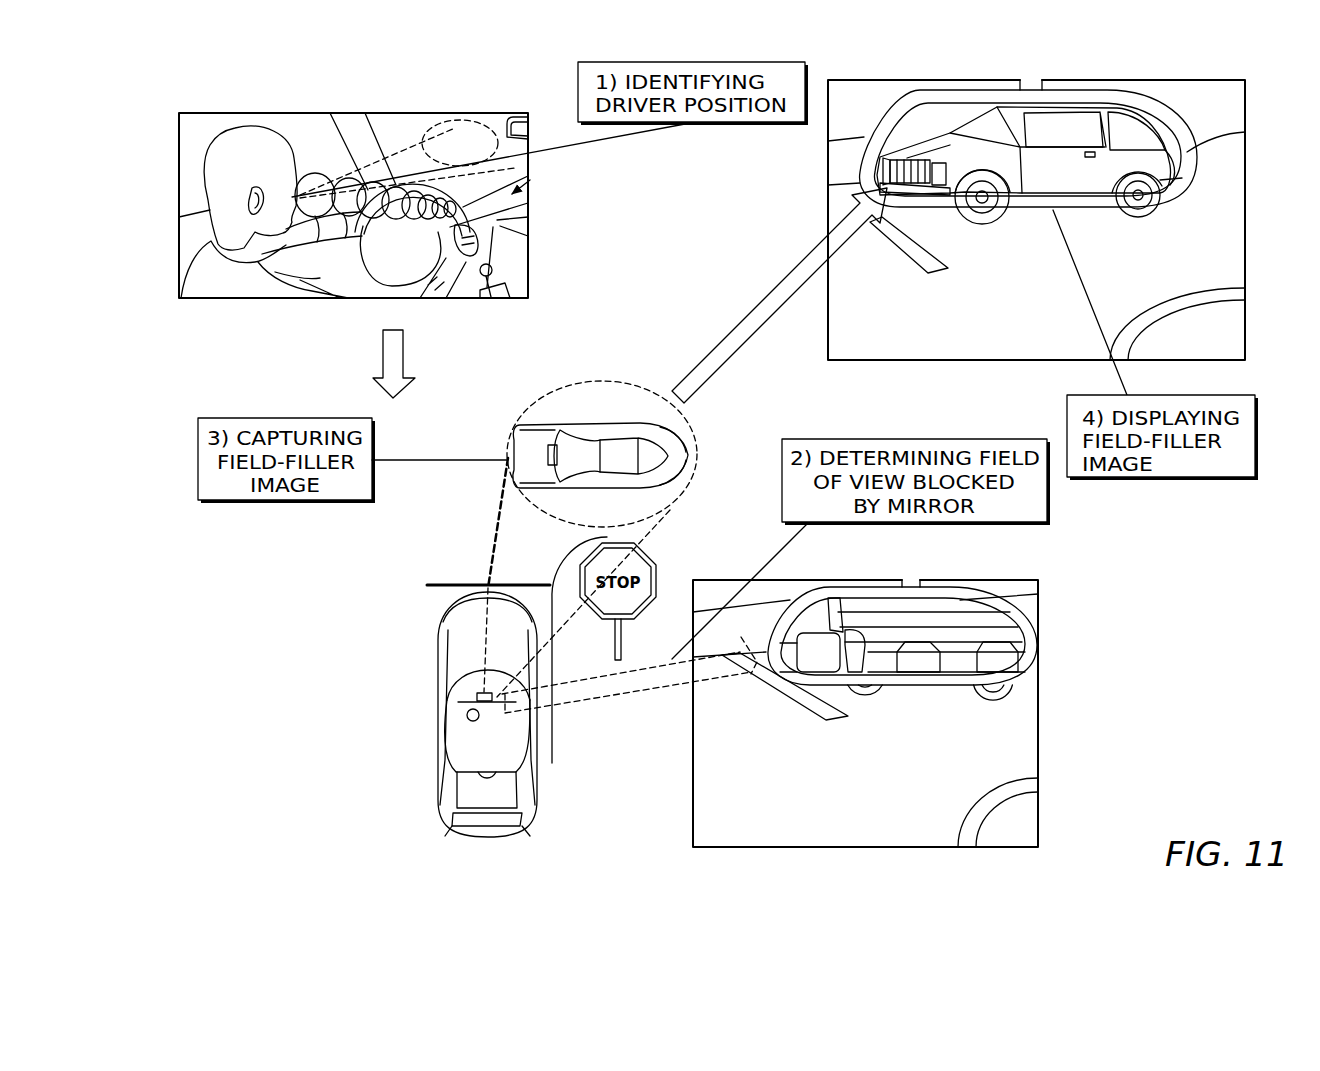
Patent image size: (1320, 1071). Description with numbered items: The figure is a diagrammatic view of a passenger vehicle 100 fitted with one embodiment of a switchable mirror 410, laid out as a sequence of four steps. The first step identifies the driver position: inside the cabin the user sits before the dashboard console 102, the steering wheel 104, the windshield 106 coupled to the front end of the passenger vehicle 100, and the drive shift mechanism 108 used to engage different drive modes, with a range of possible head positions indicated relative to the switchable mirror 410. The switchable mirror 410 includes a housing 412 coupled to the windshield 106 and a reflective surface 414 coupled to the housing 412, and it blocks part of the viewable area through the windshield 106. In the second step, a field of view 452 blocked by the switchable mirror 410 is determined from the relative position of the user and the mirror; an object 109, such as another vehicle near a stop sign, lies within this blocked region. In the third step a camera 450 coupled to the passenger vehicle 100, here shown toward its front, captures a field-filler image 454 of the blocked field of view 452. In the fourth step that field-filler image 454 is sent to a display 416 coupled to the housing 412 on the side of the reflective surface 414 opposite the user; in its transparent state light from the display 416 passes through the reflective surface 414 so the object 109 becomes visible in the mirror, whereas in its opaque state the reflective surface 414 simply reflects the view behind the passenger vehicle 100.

The passenger vehicle 100 is at (226, 108).
The dashboard console 102 is at (490, 181).
The steering wheel 104 is at (506, 226).
The windshield 106 is at (397, 119).
The drive shift mechanism 108 is at (493, 303).
The object 109 is at (988, 250).
The switchable mirror 410 is at (531, 105).
The housing 412 is at (496, 120).
The reflective surface 414 is at (527, 124).
The display 416 is at (1067, 112).
The camera 450 is at (480, 578).
The field of view 452 is at (652, 532).
The field-filler image 454 is at (505, 494).